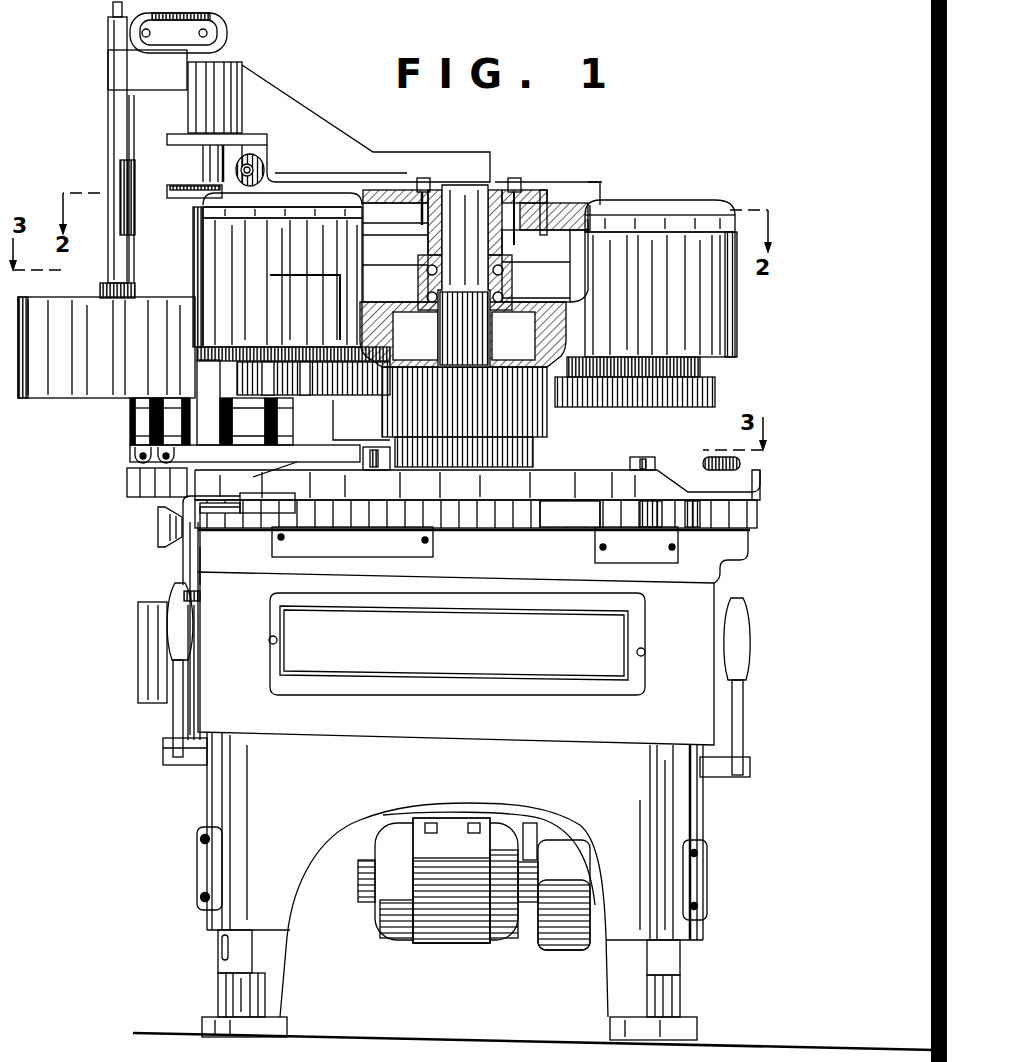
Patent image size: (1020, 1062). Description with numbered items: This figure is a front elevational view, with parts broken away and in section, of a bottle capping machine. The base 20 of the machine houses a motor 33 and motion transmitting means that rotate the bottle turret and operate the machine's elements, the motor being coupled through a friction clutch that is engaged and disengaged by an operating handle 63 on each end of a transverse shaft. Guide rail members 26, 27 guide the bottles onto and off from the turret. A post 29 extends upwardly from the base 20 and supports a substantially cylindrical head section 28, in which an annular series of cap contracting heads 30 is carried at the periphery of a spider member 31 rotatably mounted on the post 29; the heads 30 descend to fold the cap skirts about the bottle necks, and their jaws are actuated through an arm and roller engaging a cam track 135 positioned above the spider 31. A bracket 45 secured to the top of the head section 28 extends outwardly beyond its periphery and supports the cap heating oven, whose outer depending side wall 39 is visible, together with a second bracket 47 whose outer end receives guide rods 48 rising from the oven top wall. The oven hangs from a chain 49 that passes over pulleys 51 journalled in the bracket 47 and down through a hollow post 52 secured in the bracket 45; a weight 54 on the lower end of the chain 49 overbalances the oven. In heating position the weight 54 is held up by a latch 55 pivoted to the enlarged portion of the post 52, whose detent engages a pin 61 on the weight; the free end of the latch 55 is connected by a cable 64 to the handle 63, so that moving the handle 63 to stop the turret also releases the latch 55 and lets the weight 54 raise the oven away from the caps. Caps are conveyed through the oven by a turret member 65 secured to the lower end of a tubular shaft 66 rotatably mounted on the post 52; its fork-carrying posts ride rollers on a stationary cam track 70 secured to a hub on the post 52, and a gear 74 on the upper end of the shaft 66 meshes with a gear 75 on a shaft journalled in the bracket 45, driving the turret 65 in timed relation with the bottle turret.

The base 20 is at (707, 602).
The guide rail member 26 is at (578, 500).
The guide rail member 27 is at (752, 535).
The head section 28 is at (737, 313).
The post 29 is at (460, 196).
The cap contracting head 30 is at (315, 390).
The spider member 31 is at (566, 303).
The motor 33 is at (460, 945).
The outer depending side wall 39 is at (45, 390).
The bracket 45 is at (330, 130).
The second bracket 47 is at (108, 70).
The guide rod 48 is at (110, 145).
The chain 49 is at (135, 115).
The pulley 51 is at (222, 25).
The hollow post 52 is at (205, 163).
The weight 54 is at (140, 640).
The latch 55 is at (184, 555).
The pin 61 is at (182, 578).
The operating handle 63 is at (172, 718).
The cable 64 is at (200, 597).
The turret member 65 is at (132, 428).
The tubular shaft 66 is at (200, 262).
The cam track 70 is at (127, 483).
The gear 74 is at (172, 198).
The gear 75 is at (262, 163).
The cam track 135 is at (555, 232).